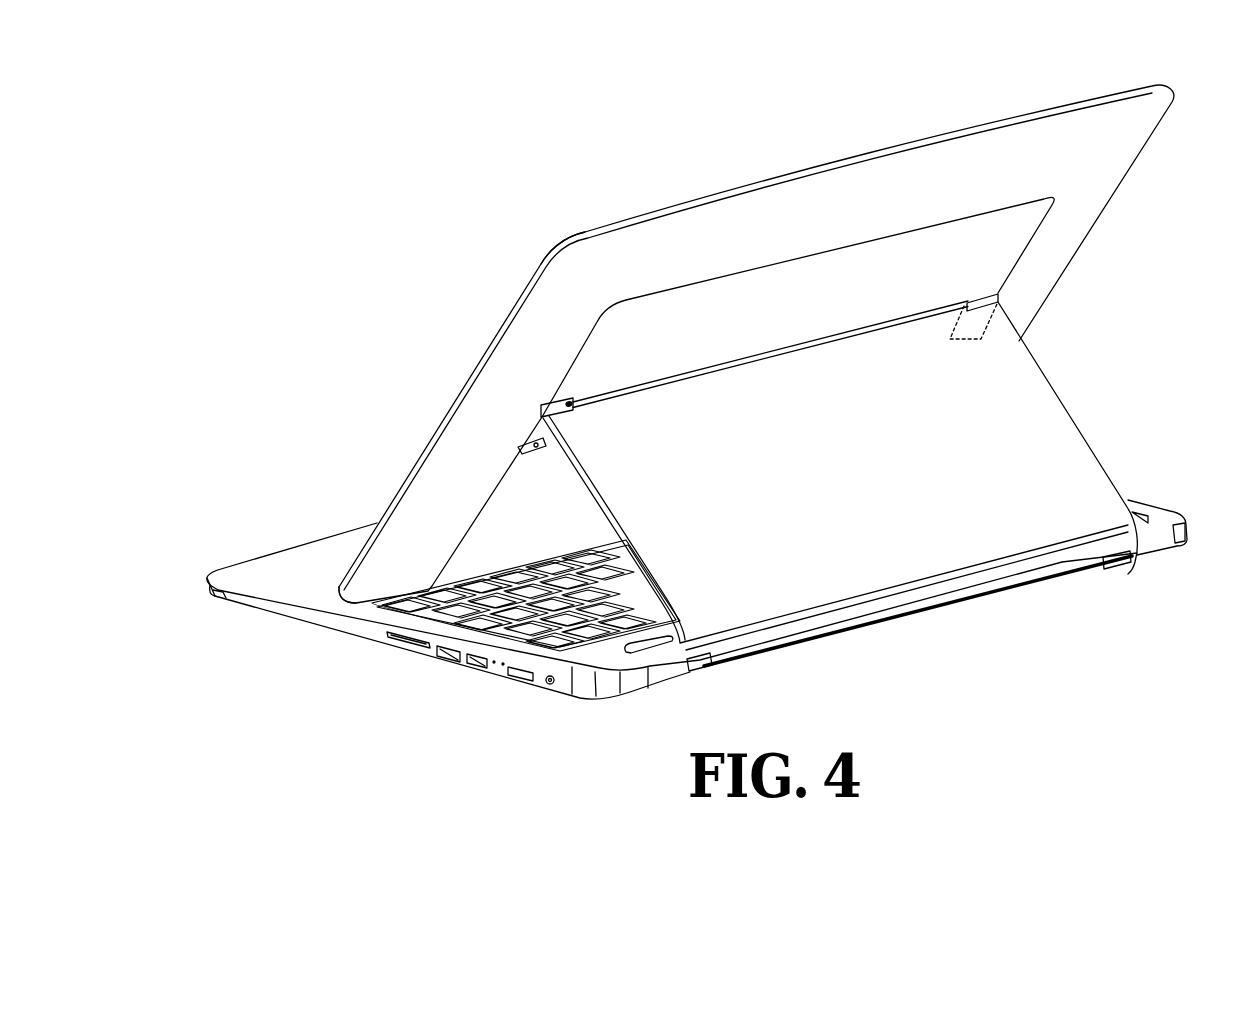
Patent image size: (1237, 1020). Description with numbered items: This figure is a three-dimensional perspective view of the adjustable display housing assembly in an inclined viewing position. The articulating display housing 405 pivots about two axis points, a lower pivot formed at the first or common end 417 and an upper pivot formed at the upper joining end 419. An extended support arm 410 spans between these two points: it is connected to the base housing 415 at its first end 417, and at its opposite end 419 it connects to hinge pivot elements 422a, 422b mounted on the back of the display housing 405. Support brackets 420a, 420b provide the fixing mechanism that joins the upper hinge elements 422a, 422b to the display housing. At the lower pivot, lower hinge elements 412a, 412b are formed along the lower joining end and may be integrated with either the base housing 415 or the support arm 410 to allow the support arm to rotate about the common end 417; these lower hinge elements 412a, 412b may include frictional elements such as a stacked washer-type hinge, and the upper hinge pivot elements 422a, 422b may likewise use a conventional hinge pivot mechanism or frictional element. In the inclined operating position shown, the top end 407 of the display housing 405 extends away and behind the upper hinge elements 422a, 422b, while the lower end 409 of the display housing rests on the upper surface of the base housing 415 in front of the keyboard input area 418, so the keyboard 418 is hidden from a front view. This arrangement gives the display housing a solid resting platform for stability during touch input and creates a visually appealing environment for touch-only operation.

The display housing 405 is at (652, 213).
The top end 407 is at (546, 253).
The lower end 409 is at (339, 575).
The support arm 410 is at (1080, 438).
The lower hinge element 412a is at (699, 670).
The lower hinge element 412b is at (1128, 569).
The base housing 415 is at (246, 565).
The first end 417 is at (918, 622).
The keyboard input area 418 is at (388, 626).
The upper joining end 419 is at (797, 366).
The support bracket 420a is at (538, 455).
The support bracket 420b is at (973, 334).
The hinge pivot element 422a is at (567, 403).
The hinge pivot element 422b is at (979, 298).